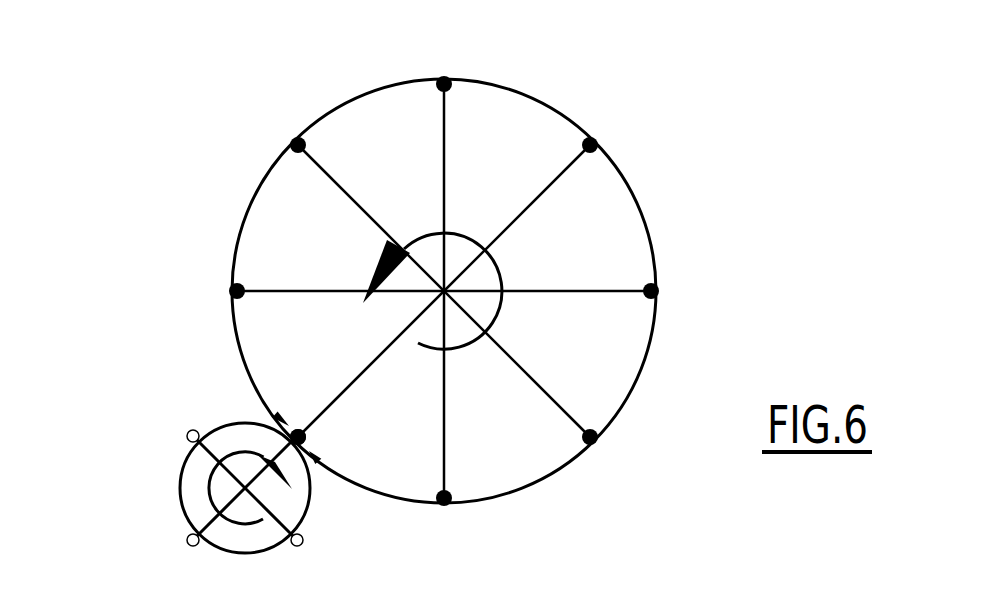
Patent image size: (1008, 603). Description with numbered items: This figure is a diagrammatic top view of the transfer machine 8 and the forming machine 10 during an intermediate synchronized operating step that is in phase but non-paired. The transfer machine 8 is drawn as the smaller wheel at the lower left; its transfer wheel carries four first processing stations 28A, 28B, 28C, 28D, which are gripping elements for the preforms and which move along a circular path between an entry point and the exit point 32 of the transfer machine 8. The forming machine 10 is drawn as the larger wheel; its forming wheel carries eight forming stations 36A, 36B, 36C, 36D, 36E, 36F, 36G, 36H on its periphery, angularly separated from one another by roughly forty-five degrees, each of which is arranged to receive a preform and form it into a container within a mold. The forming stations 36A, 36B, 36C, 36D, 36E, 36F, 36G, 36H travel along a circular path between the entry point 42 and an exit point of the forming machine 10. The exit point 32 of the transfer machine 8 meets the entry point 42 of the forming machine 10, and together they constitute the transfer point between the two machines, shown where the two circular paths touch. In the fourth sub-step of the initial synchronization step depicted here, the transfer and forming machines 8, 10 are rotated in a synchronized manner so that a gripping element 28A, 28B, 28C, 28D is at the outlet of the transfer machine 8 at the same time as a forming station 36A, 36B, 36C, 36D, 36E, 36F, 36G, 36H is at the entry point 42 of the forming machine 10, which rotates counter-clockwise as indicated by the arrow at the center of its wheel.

The transfer machine 8 is at (112, 535).
The forming machine 10 is at (730, 158).
The first processing station 28A is at (189, 432).
The first processing station 28B is at (189, 543).
The first processing station 28C is at (303, 541).
The first processing station 28D is at (300, 442).
The exit point 32 is at (316, 459).
The forming station 36A is at (598, 442).
The forming station 36B is at (444, 506).
The forming station 36C is at (296, 428).
The forming station 36D is at (230, 291).
The forming station 36E is at (291, 140).
The forming station 36F is at (445, 75).
The forming station 36G is at (597, 139).
The forming station 36H is at (658, 291).
The entry point 42 is at (283, 421).